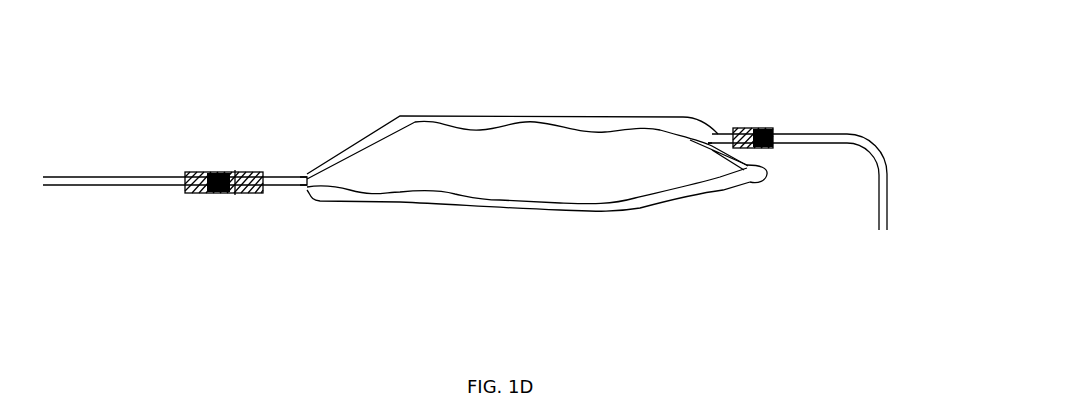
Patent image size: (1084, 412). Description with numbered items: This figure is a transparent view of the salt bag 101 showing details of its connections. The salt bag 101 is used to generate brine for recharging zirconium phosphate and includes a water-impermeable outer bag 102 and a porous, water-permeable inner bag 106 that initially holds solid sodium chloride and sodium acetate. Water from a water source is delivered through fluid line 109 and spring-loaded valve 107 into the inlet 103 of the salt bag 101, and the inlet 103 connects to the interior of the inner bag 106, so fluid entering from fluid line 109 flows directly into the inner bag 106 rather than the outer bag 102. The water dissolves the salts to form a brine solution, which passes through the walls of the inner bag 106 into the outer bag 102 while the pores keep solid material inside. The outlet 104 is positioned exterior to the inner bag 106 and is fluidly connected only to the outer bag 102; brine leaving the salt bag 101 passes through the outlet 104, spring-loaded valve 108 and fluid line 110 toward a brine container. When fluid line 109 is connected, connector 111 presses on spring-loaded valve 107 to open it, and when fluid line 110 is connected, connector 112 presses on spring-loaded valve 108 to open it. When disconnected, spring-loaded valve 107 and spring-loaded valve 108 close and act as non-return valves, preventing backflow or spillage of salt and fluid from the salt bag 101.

The salt bag 101 is at (527, 128).
The outer bag 102 is at (617, 218).
The inlet 103 is at (293, 192).
The outlet 104 is at (725, 132).
The inner bag 106 is at (630, 175).
The spring-loaded valve 107 is at (237, 190).
The spring-loaded valve 108 is at (748, 132).
The fluid line 109 is at (132, 188).
The fluid line 110 is at (882, 158).
The connector 111 is at (193, 172).
The connector 112 is at (793, 132).